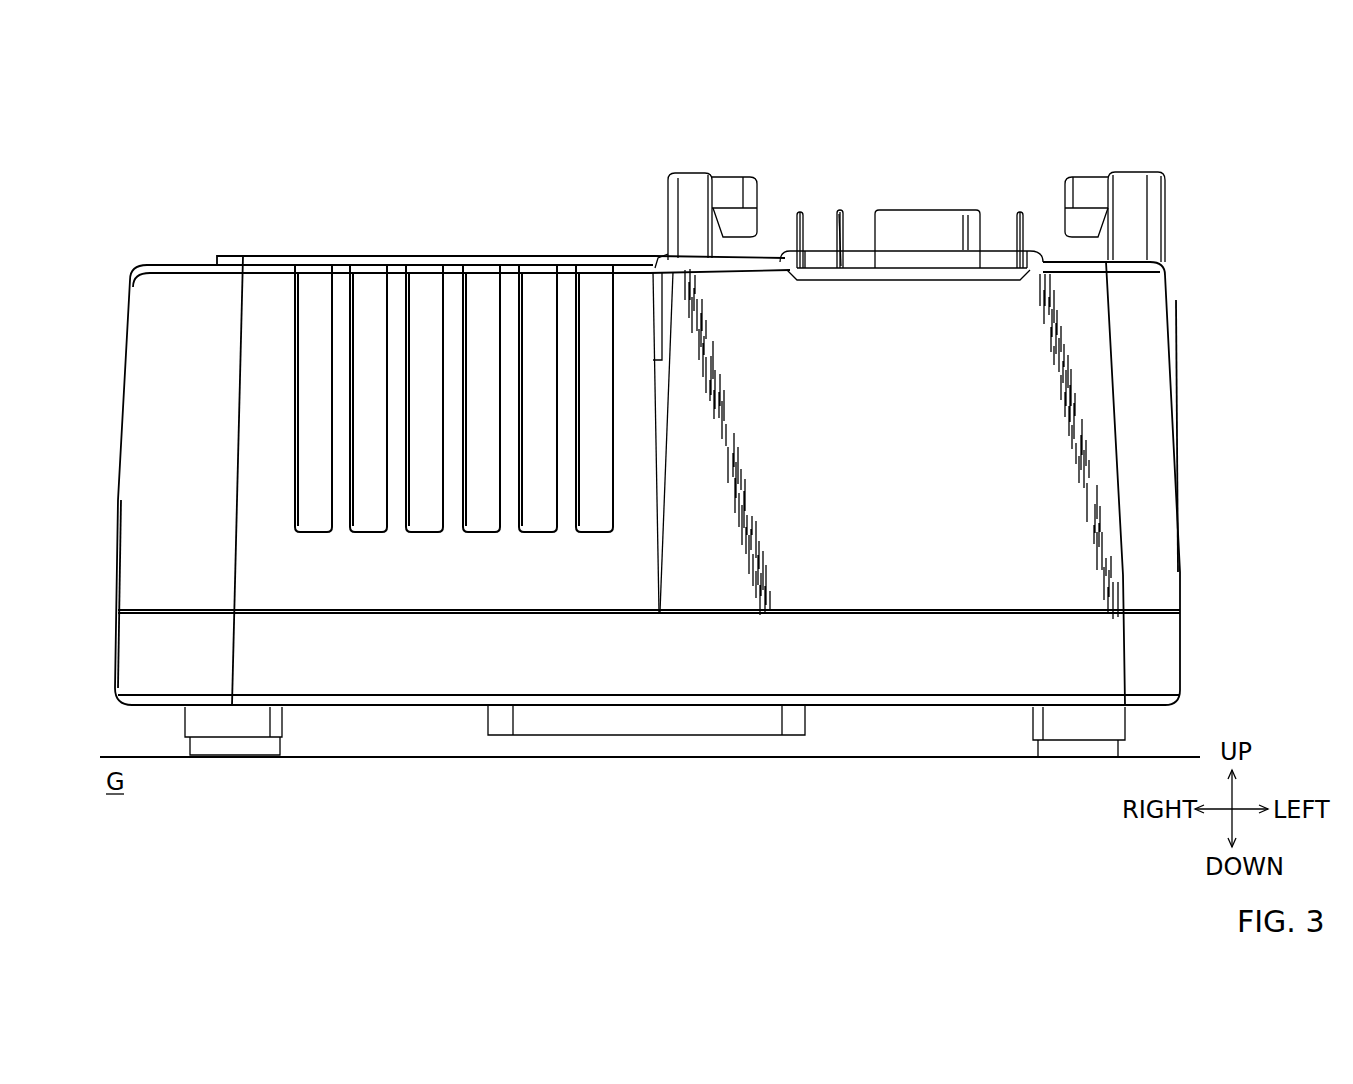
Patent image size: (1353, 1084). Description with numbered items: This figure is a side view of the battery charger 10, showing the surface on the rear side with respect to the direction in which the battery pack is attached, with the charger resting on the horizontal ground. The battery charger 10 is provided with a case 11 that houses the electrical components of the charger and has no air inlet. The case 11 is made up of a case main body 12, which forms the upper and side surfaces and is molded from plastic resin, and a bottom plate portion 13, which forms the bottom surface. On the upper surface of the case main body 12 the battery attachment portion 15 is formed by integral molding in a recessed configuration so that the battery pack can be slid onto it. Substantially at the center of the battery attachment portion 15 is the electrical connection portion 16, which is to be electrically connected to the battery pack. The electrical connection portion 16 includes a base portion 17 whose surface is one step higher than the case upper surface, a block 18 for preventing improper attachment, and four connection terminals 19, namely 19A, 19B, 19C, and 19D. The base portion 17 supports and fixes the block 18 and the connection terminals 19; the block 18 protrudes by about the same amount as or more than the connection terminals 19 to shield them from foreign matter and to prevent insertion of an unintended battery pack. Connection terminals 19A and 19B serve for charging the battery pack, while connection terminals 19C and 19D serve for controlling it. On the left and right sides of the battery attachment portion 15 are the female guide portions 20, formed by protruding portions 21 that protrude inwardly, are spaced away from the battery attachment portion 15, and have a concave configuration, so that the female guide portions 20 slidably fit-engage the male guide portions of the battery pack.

The battery charger 10 is at (483, 156).
The case 11 is at (1240, 575).
The case main body 12 is at (1157, 566).
The bottom plate portion 13 is at (1160, 660).
The battery attachment portion 15 is at (1000, 140).
The electrical connection portion 16 is at (962, 192).
The base portion 17 is at (853, 250).
The block 18 is at (912, 225).
The connection terminals 19 is at (910, 173).
The connection terminal 19A is at (1019, 213).
The connection terminal 19B is at (799, 213).
The connection terminal 19C is at (840, 211).
The connection terminal 19D is at (892, 185).
The female guide portions 20 is at (667, 166).
The protruding portions 21 is at (731, 192).